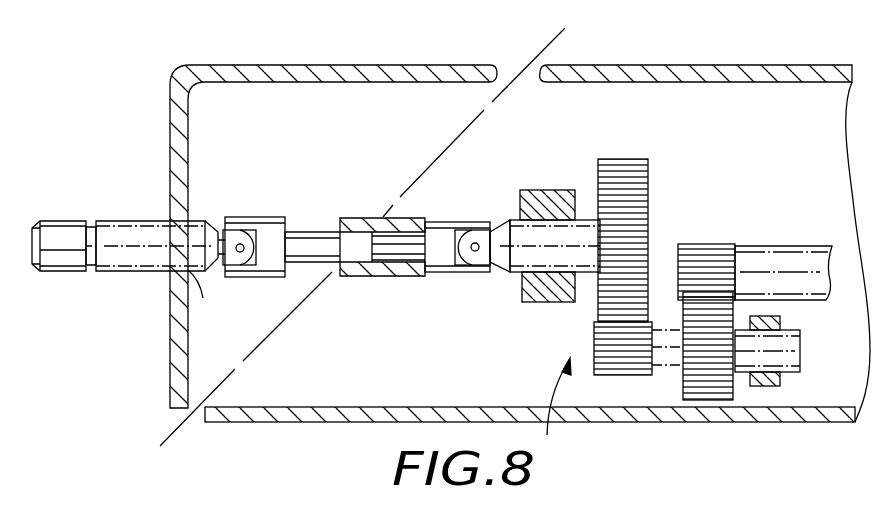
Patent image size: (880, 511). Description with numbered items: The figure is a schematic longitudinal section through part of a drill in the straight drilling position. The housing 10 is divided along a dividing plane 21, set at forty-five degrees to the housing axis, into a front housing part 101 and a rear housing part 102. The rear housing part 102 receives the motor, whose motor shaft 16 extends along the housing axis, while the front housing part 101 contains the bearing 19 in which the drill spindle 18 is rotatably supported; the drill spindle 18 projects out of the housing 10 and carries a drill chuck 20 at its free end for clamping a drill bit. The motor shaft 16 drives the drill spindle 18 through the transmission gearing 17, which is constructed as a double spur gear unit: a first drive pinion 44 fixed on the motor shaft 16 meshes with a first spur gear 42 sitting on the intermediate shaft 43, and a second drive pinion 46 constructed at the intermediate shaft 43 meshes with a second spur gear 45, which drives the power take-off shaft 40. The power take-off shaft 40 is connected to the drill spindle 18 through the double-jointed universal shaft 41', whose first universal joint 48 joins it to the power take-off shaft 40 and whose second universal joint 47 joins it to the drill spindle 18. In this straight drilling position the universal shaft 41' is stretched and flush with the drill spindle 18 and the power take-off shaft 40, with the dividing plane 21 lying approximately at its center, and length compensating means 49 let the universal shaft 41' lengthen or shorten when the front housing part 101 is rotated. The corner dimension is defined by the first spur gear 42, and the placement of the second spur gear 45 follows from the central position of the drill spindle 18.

The housing 10 is at (779, 59).
The front housing part 101 is at (304, 65).
The rear housing part 102 is at (652, 65).
The dividing plane 21 is at (540, 55).
The drill chuck 20 is at (60, 233).
The drill spindle 18 is at (135, 232).
The bearing 19 is at (203, 298).
The second universal joint 47 is at (240, 222).
The length compensating means 49 is at (388, 240).
The universal shaft 41' is at (466, 226).
The first universal joint 48 is at (480, 262).
The power take-off shaft 40 is at (558, 260).
The second spur gear 45 is at (622, 159).
The second drive pinion 46 is at (618, 365).
The first spur gear 42 is at (712, 378).
The first drive pinion 44 is at (712, 244).
The motor shaft 16 is at (790, 258).
The intermediate shaft 43 is at (790, 346).
The transmission gearing 17 is at (565, 409).